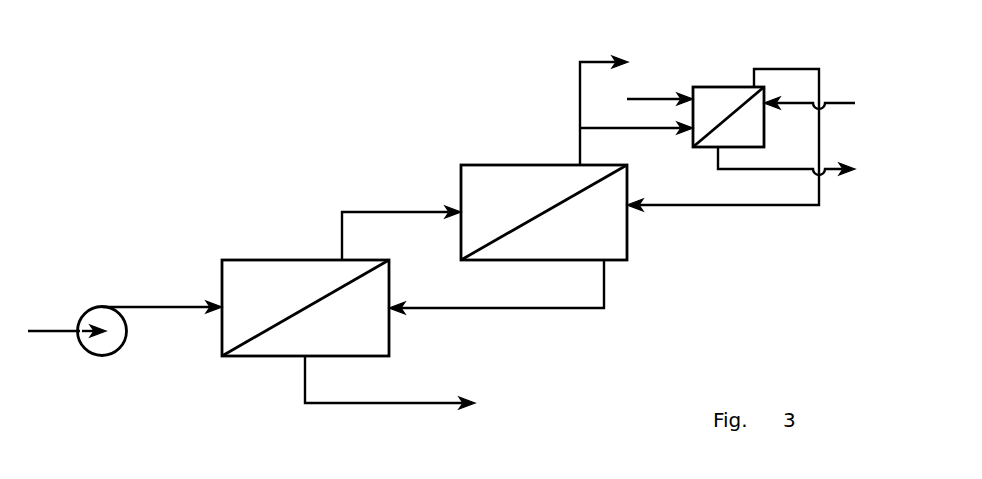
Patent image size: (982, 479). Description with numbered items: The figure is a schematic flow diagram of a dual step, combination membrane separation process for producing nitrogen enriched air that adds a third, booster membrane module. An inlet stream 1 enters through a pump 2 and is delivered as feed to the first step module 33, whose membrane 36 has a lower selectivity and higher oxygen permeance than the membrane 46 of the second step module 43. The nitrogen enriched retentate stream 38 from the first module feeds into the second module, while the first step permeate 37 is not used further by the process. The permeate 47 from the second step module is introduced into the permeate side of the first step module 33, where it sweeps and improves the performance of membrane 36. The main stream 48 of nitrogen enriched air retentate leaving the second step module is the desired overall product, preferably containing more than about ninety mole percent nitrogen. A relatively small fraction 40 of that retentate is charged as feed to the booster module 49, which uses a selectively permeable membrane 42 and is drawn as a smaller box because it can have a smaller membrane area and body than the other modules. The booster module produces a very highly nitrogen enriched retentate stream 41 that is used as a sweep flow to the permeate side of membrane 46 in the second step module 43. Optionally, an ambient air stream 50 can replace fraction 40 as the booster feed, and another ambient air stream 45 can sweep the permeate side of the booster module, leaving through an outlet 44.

The feed liquid inlet 1 is at (50, 330).
The pump 2 is at (100, 357).
The first step module 33 is at (248, 258).
The membrane of the first step module 36 is at (247, 343).
The first step permeate 37 is at (397, 403).
The nitrogen enriched retentate stream 38 is at (360, 211).
The second step module 43 is at (487, 163).
The membrane of the second step module 46 is at (572, 195).
The permeate from the second step module 47 is at (463, 308).
The main stream of NEA retentate 48 is at (578, 100).
The fraction of the retentate stream 40 is at (633, 130).
The booster module 49 is at (718, 85).
The ambient air stream 50 is at (643, 97).
The selectively permeable membrane 42 is at (740, 102).
The ambient air stream 45 is at (830, 104).
The very highly nitrogen enriched retentate stream 41 is at (742, 205).
The outlet line from third unit 44 is at (742, 170).